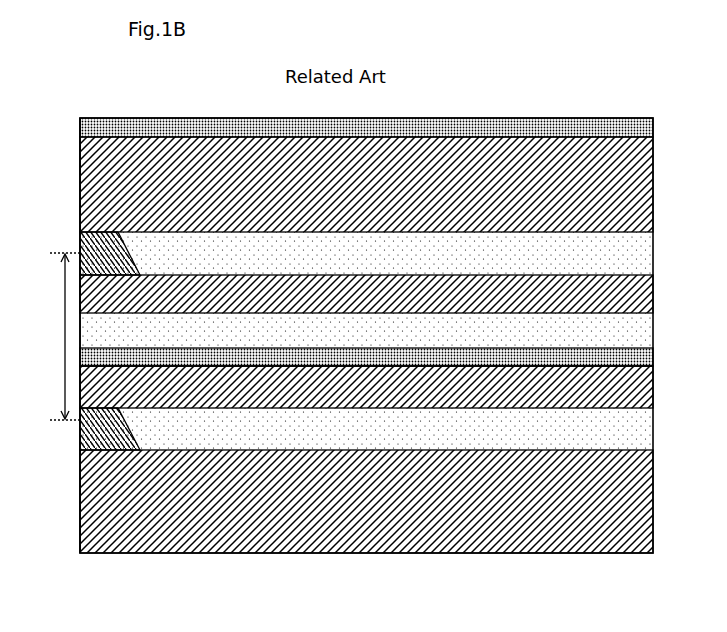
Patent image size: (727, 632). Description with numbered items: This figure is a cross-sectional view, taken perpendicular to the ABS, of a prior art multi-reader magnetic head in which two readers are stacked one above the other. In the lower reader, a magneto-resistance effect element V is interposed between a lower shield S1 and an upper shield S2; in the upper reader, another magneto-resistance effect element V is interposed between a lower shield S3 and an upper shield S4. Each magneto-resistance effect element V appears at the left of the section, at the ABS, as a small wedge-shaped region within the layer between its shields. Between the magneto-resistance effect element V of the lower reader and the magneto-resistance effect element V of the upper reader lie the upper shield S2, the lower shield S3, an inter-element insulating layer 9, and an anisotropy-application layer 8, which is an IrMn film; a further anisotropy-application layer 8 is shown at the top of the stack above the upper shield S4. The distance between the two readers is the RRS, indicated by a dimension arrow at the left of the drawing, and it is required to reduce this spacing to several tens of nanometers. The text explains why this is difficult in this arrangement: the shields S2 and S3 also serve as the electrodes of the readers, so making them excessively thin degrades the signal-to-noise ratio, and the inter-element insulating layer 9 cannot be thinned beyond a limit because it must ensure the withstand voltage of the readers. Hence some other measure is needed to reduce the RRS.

The anisotropy-application layer 8 is at (653, 133).
The inter-element insulating layer 9 is at (612, 328).
The lower shield S1 is at (653, 485).
The upper shield S2 is at (655, 388).
The lower shield S3 is at (653, 309).
The upper shield S4 is at (653, 181).
The magneto-resistance effect element V is at (120, 232).
The air bearing surface ABS is at (70, 196).
The reader-to-reader spacing RRS is at (54, 336).